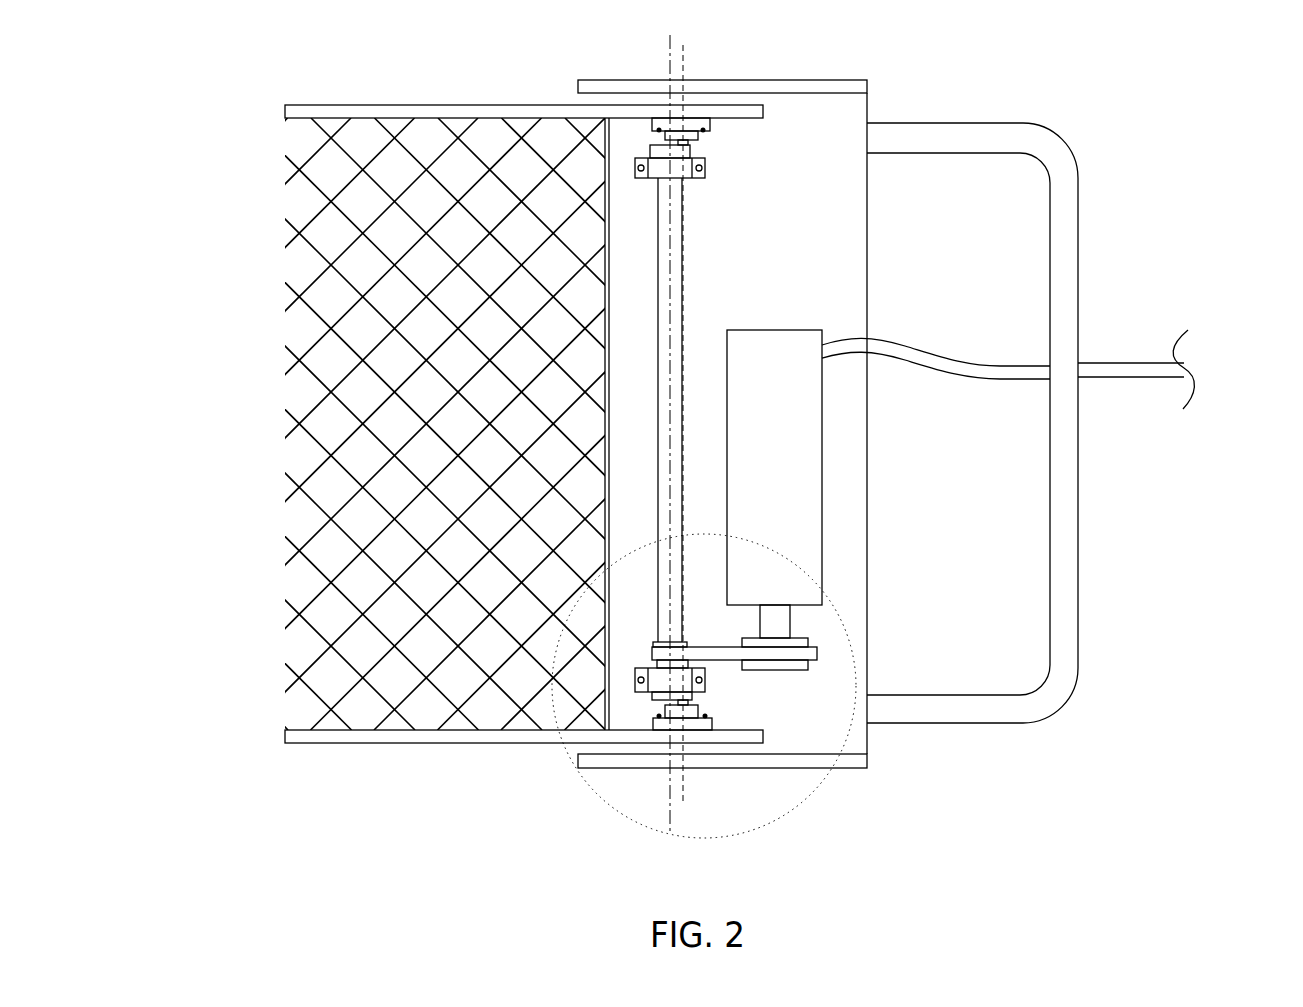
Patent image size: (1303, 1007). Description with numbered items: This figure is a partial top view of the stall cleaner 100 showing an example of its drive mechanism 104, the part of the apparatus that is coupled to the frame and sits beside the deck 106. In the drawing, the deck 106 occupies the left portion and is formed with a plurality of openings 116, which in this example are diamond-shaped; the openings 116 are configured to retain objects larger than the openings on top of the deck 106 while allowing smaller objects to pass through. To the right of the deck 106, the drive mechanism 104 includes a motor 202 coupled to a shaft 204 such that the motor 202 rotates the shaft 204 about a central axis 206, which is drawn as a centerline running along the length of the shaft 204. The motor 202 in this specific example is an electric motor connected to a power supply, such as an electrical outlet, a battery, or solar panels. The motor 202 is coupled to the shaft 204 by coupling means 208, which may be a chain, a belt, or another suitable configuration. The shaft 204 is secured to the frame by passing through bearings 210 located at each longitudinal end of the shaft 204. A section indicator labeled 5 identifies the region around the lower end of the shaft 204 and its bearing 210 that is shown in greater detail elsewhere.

The stall cleaner 100 is at (200, 84).
The drive mechanism 104 is at (754, 449).
The deck 106 is at (620, 424).
The openings 116 is at (333, 362).
The motor 202 is at (820, 495).
The shaft 204 is at (681, 292).
The central axis 206 is at (668, 57).
The coupling means 208 is at (722, 646).
The bearings 210 is at (705, 165).
The section view indicator (FIG. 5) 5 is at (810, 790).